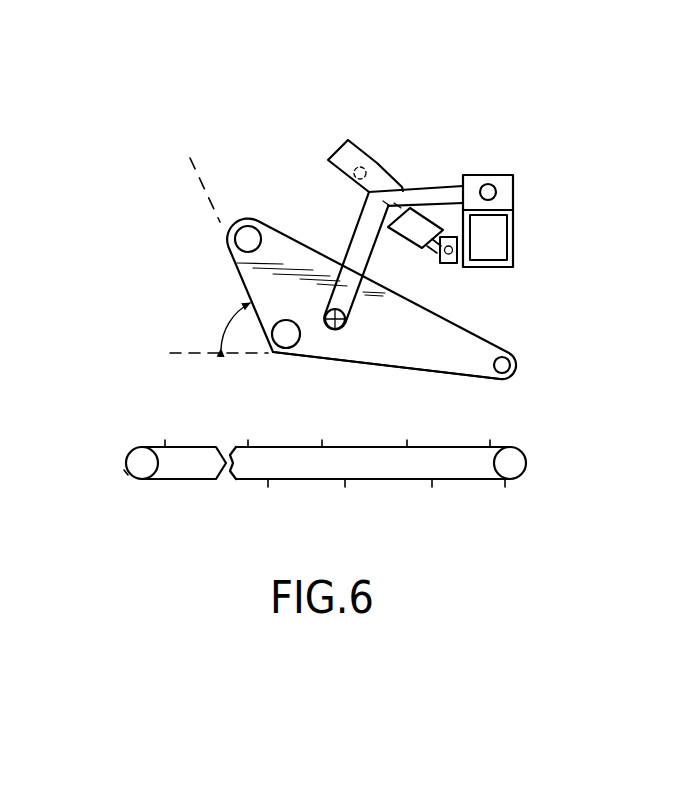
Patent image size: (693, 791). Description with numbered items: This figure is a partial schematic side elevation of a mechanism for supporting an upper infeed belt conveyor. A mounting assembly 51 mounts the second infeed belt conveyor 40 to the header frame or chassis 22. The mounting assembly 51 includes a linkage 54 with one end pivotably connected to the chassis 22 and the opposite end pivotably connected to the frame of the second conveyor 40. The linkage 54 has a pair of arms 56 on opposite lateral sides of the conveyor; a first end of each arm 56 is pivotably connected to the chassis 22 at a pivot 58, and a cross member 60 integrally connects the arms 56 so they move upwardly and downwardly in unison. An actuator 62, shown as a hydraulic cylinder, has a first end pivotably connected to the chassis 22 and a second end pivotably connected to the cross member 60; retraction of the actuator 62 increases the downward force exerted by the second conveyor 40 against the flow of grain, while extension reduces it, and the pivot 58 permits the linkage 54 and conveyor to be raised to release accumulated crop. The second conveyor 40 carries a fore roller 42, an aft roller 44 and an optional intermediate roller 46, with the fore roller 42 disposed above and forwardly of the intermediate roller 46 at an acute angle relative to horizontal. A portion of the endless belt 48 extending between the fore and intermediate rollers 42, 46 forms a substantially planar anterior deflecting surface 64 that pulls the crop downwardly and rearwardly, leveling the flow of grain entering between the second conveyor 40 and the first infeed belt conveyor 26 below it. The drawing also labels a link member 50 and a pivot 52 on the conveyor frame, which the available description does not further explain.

The header frame or chassis 22 is at (517, 233).
The first infeed belt conveyor 26 is at (200, 480).
The second infeed belt conveyor 40 is at (230, 138).
The fore roller 42 is at (247, 228).
The aft roller 44 is at (500, 373).
The intermediate roller 46 is at (275, 353).
The endless belt 48 is at (442, 377).
The arm 50 is at (347, 330).
The mounting assembly 51 is at (378, 90).
The arm pivot 52 is at (327, 327).
The linkage 54 is at (338, 117).
The arm 56 is at (420, 186).
The pivot 58 is at (486, 184).
The cross member 60 is at (338, 170).
The actuator 62 is at (408, 242).
The anterior deflecting surface 64 is at (235, 284).